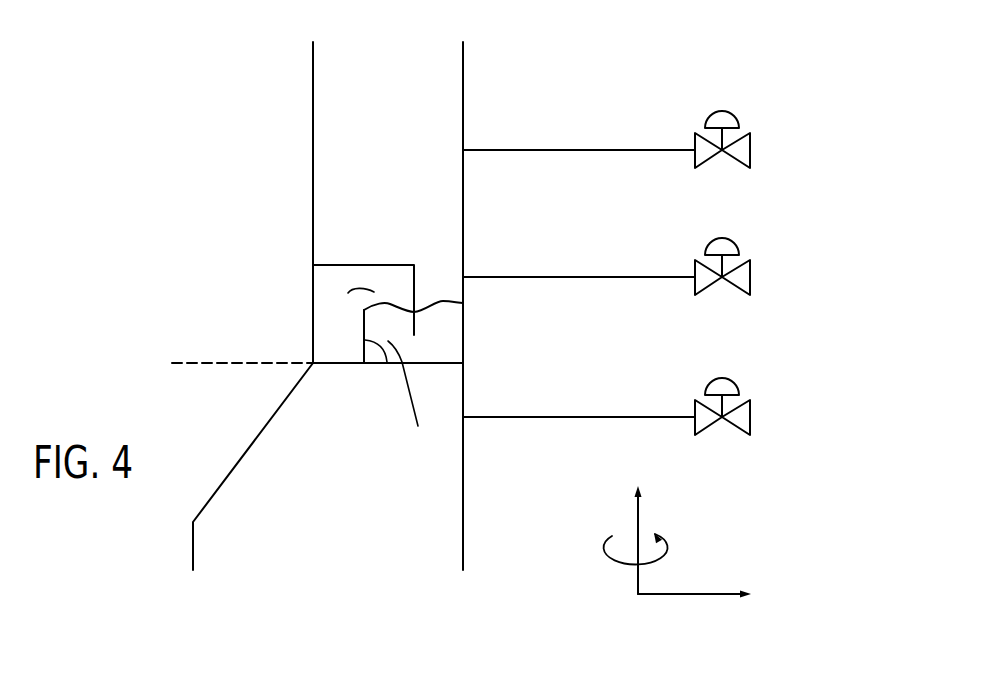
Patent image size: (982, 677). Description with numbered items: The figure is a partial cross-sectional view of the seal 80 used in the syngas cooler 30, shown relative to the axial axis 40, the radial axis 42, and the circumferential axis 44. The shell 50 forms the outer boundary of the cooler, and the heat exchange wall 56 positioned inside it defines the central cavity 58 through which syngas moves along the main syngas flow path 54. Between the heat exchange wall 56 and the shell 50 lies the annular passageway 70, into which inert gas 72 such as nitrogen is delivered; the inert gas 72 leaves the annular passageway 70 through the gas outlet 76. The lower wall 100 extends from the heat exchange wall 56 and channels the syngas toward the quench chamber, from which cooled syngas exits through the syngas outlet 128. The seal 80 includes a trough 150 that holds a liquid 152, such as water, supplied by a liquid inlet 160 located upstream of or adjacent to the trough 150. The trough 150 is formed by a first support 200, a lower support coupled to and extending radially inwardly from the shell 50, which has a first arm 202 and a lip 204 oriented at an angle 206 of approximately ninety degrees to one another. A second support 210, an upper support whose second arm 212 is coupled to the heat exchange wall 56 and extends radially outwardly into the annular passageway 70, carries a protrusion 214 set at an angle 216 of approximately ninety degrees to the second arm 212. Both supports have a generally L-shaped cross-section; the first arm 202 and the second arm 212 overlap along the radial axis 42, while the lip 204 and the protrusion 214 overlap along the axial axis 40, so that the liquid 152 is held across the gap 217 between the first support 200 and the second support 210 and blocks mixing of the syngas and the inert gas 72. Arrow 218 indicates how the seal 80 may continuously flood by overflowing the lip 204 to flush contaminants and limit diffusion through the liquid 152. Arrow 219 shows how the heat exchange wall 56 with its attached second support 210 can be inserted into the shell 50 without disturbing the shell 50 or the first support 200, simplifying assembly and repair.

The syngas cooler 30 is at (643, 56).
The axial axis 40 is at (638, 517).
The radial axis 42 is at (698, 595).
The circumferential axis 44 is at (622, 565).
The shell 50 is at (464, 88).
The main syngas flow path 54 is at (206, 245).
The heat exchange wall 56 is at (313, 96).
The central cavity 58 is at (248, 148).
The annular passageway 70 is at (410, 178).
The inert gas 72 is at (414, 123).
The gas outlet 76 is at (579, 150).
The seal 80 is at (288, 272).
The lower wall 100 is at (253, 443).
The syngas outlet 128 is at (579, 417).
The trough 150 is at (440, 353).
The liquid 152 is at (458, 333).
The liquid inlet 160 is at (579, 277).
The first support 200 is at (393, 373).
The first arm 202 is at (446, 362).
The lip 204 is at (363, 326).
The angle 206 is at (413, 397).
The second support 210 is at (342, 250).
The second arm 212 is at (363, 265).
The protrusion 214 is at (415, 272).
The angle 216 is at (402, 266).
The gap 217 is at (420, 347).
The arrow 218 is at (343, 311).
The arrow 219 is at (328, 190).